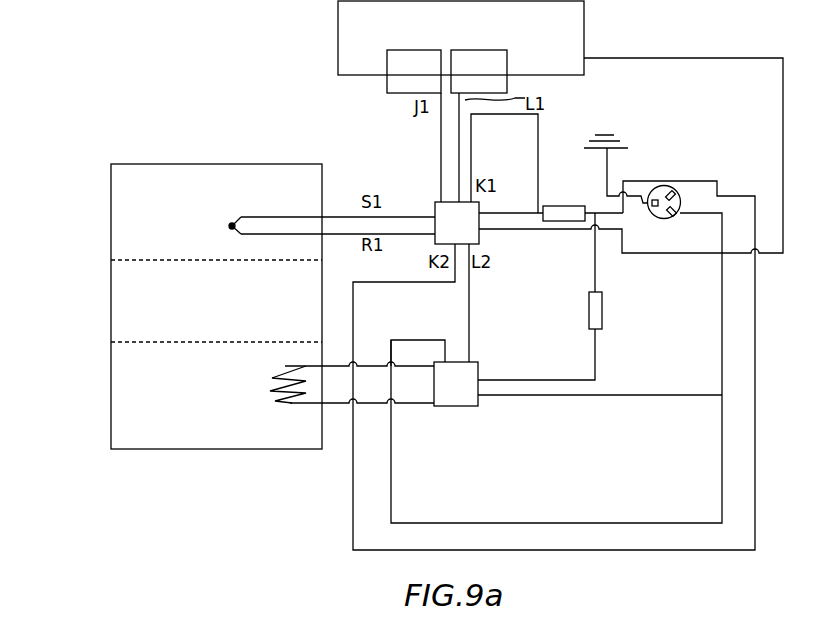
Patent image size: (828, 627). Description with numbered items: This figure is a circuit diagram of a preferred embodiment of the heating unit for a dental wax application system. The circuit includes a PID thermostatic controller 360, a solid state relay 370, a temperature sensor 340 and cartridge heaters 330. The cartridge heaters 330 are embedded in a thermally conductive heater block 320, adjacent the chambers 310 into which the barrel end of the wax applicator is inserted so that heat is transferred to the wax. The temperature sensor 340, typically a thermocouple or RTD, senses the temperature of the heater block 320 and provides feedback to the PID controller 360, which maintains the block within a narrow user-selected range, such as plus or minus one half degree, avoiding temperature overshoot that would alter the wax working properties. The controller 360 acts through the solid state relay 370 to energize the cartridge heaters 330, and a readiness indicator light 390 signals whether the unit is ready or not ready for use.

The chambers 310 is at (111, 285).
The heater block 320 is at (206, 430).
The cartridge heaters 330 is at (290, 405).
The temperature sensor 340 is at (243, 215).
The PID thermostatic controller 360 is at (444, 212).
The solid state relay 370 is at (447, 397).
The readiness indicator light 390 is at (406, 50).